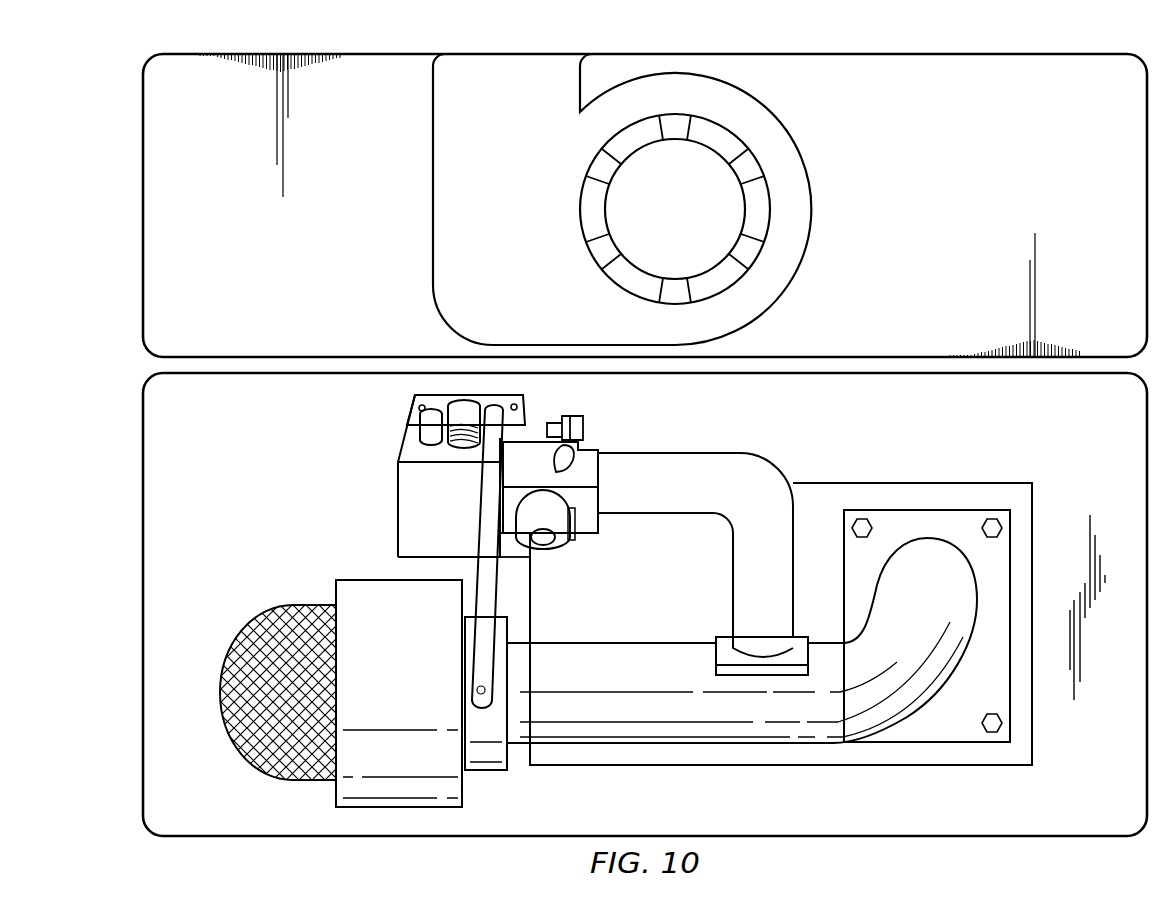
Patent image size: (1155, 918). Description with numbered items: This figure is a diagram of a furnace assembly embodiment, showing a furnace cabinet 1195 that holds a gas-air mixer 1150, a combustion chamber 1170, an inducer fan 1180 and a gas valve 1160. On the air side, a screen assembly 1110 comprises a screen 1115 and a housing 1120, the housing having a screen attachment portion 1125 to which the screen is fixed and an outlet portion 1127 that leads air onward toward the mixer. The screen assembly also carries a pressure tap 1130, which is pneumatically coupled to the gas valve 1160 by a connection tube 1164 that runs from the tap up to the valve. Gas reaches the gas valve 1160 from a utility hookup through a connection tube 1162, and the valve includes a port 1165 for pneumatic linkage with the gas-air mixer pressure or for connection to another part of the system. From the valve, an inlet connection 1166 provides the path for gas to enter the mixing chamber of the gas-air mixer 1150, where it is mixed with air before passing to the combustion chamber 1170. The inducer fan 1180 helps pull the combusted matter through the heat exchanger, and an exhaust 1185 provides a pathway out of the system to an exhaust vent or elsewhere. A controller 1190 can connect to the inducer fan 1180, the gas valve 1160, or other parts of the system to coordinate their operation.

The screen assembly 1110 is at (265, 614).
The screen 1115 is at (260, 777).
The housing 1120 is at (477, 800).
The screen attachment portion 1125 is at (418, 660).
The outlet portion 1127 is at (500, 668).
The pressure tap 1130 is at (490, 702).
The gas-air mixer 1150 is at (683, 643).
The gas valve 1160 is at (464, 519).
The connection tube 1162 is at (308, 301).
The connection tube 1164 is at (485, 492).
The port 1165 is at (418, 413).
The inlet connection 1166 is at (758, 455).
The combustion chamber 1170 is at (696, 586).
The inducer fan 1180 is at (757, 135).
The exhaust 1185 is at (497, 54).
The controller 1190 is at (702, 230).
The cabinet 1195 is at (1028, 808).